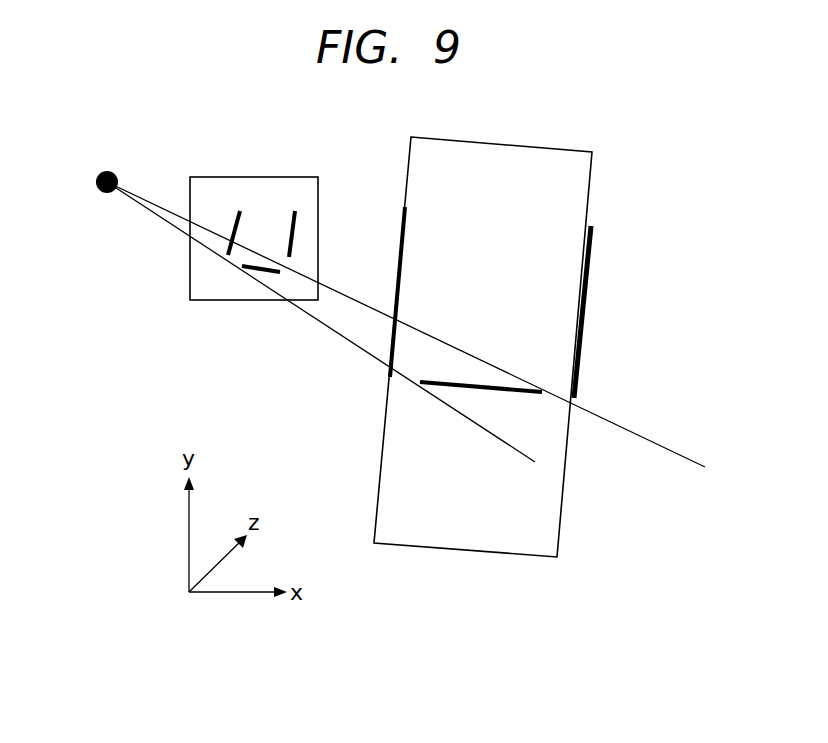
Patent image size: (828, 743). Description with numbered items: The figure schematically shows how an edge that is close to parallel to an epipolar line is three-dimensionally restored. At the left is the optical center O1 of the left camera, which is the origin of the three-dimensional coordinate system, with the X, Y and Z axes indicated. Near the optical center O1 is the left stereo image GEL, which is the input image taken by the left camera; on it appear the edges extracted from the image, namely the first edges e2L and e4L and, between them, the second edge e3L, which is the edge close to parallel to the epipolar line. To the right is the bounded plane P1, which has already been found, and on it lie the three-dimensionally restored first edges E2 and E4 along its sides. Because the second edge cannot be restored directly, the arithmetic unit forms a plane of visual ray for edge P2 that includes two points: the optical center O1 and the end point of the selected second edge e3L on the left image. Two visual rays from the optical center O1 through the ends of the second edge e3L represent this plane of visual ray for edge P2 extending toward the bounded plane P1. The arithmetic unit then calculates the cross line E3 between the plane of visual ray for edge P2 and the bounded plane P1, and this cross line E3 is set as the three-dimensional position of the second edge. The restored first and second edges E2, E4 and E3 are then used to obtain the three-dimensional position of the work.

The optical center of the left camera O1 is at (106, 171).
The bounded plane P1 is at (570, 162).
The plane of visual ray for edge P2 is at (352, 326).
The left stereo image GEL is at (267, 188).
The first edge on the left image e2L is at (236, 222).
The second edge on the left image e3L is at (270, 276).
The first edge on the left image e4L is at (295, 232).
The three-dimensionally restored first edge E2 is at (401, 235).
The cross line E3 is at (520, 396).
The three-dimensionally restored first edge E4 is at (587, 290).